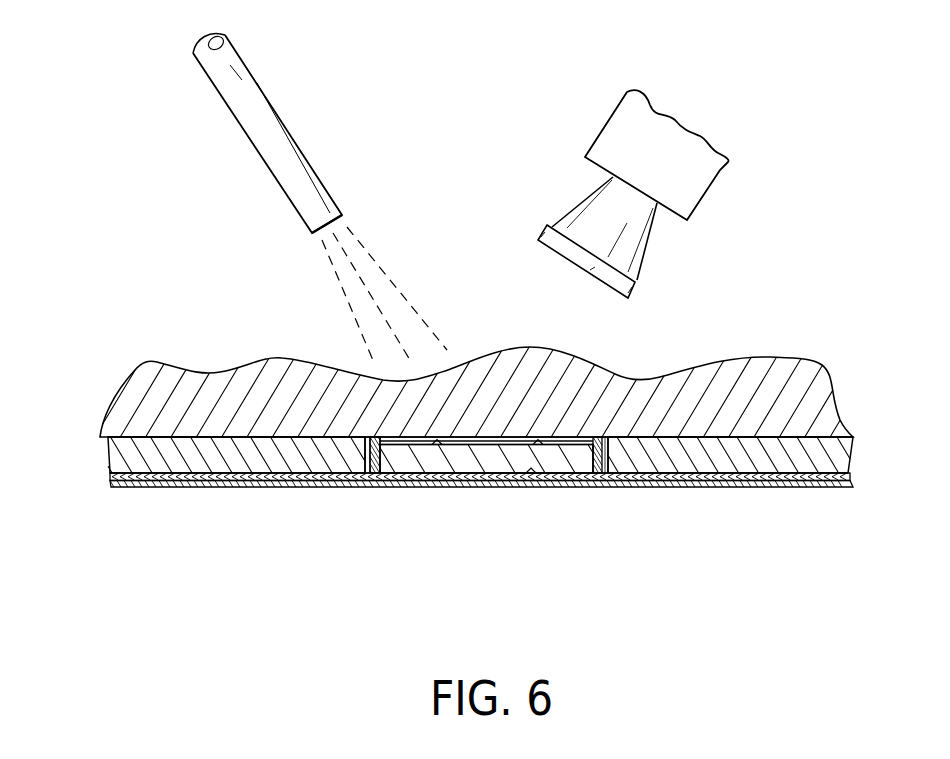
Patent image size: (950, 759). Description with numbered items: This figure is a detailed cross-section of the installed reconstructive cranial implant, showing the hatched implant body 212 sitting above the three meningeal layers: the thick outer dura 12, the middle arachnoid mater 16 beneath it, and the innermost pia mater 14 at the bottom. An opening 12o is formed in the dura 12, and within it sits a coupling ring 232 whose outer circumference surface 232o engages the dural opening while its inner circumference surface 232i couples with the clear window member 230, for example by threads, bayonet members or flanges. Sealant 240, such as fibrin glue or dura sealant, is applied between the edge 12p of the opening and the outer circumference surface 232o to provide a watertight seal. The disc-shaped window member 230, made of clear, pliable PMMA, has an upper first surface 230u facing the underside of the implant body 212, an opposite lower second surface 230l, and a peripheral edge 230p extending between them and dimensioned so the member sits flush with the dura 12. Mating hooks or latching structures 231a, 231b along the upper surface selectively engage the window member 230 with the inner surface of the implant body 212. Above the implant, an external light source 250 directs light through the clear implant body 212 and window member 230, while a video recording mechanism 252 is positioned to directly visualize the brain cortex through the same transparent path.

The implant body 212 is at (813, 388).
The dura 12 is at (122, 453).
The edge of the opening 12p is at (365, 441).
The opening 12o is at (590, 437).
The pia mater 14 is at (128, 487).
The arachnoid mater 16 is at (108, 477).
The window member 230 is at (552, 462).
The upper first surface 230u is at (498, 440).
The lower second surface 230l is at (445, 473).
The peripheral edge 230p is at (596, 457).
The latching structure 231a is at (553, 440).
The latching structure 231b is at (531, 470).
The coupling ring 232 is at (377, 464).
The outer circumference surface 232o is at (368, 458).
The inner circumference surface 232i is at (383, 455).
The sealant 240 is at (633, 480).
The light source 250 is at (258, 83).
The video recording mechanism 252 is at (696, 180).